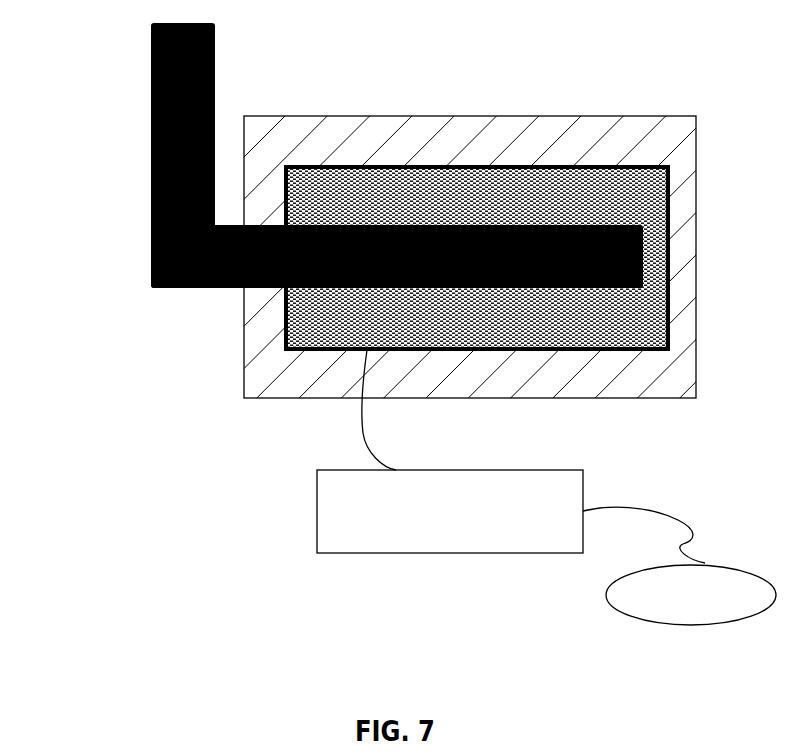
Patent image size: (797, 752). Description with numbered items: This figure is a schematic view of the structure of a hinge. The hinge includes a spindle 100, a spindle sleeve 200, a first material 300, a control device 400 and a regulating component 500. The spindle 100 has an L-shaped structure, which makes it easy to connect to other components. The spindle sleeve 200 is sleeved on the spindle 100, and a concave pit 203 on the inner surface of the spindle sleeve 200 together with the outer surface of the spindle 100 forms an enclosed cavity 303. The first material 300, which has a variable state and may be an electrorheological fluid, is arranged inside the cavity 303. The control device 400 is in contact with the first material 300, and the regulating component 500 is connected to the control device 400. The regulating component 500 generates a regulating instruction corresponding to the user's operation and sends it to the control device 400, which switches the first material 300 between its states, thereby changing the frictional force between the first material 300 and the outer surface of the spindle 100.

The spindle 100 is at (143, 200).
The spindle sleeve 200 is at (540, 108).
The concave pit 203 is at (376, 155).
The first material 300 is at (538, 200).
The cavity 303 is at (460, 182).
The control device 400 is at (433, 545).
The regulating component 500 is at (700, 617).